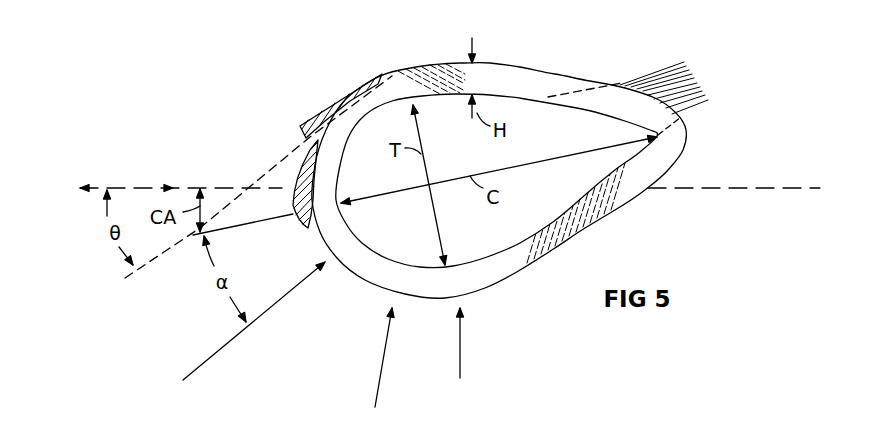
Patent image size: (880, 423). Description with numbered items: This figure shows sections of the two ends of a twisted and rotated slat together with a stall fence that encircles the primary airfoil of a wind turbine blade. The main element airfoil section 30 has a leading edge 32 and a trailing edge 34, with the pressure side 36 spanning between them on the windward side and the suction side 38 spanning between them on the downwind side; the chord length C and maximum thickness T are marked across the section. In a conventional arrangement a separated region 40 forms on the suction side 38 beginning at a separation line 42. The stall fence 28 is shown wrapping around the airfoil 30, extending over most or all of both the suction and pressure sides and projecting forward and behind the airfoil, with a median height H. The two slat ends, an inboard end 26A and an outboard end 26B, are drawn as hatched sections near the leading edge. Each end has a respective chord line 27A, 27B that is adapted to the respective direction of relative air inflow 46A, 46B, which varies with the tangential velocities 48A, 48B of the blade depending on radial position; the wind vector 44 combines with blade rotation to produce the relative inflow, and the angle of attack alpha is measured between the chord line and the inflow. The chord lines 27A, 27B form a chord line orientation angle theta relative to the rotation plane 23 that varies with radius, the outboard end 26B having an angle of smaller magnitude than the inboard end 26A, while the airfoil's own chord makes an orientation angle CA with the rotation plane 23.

The rotation plane 23 is at (220, 188).
The inboard end of slat 26A is at (295, 223).
The outboard end of slat 26B is at (335, 98).
The chord line of inboard slat end 27A is at (296, 205).
The chord line of outboard slat end 27B is at (320, 126).
The stall fence 28 is at (420, 78).
The airfoil section 30 is at (368, 252).
The leading edge 32 is at (343, 203).
The trailing edge 34 is at (664, 134).
The pressure side 36 is at (508, 250).
The suction side 38 is at (502, 93).
The separated region 40 is at (660, 88).
The separation line 42 is at (537, 95).
The wind vector 44 is at (460, 350).
The relative air inflow direction at inboard end 46A is at (382, 365).
The relative air inflow direction at outboard end 46B is at (288, 293).
The tangential velocity at inboard end 48A is at (171, 188).
The tangential velocity at outboard end 48B is at (82, 188).